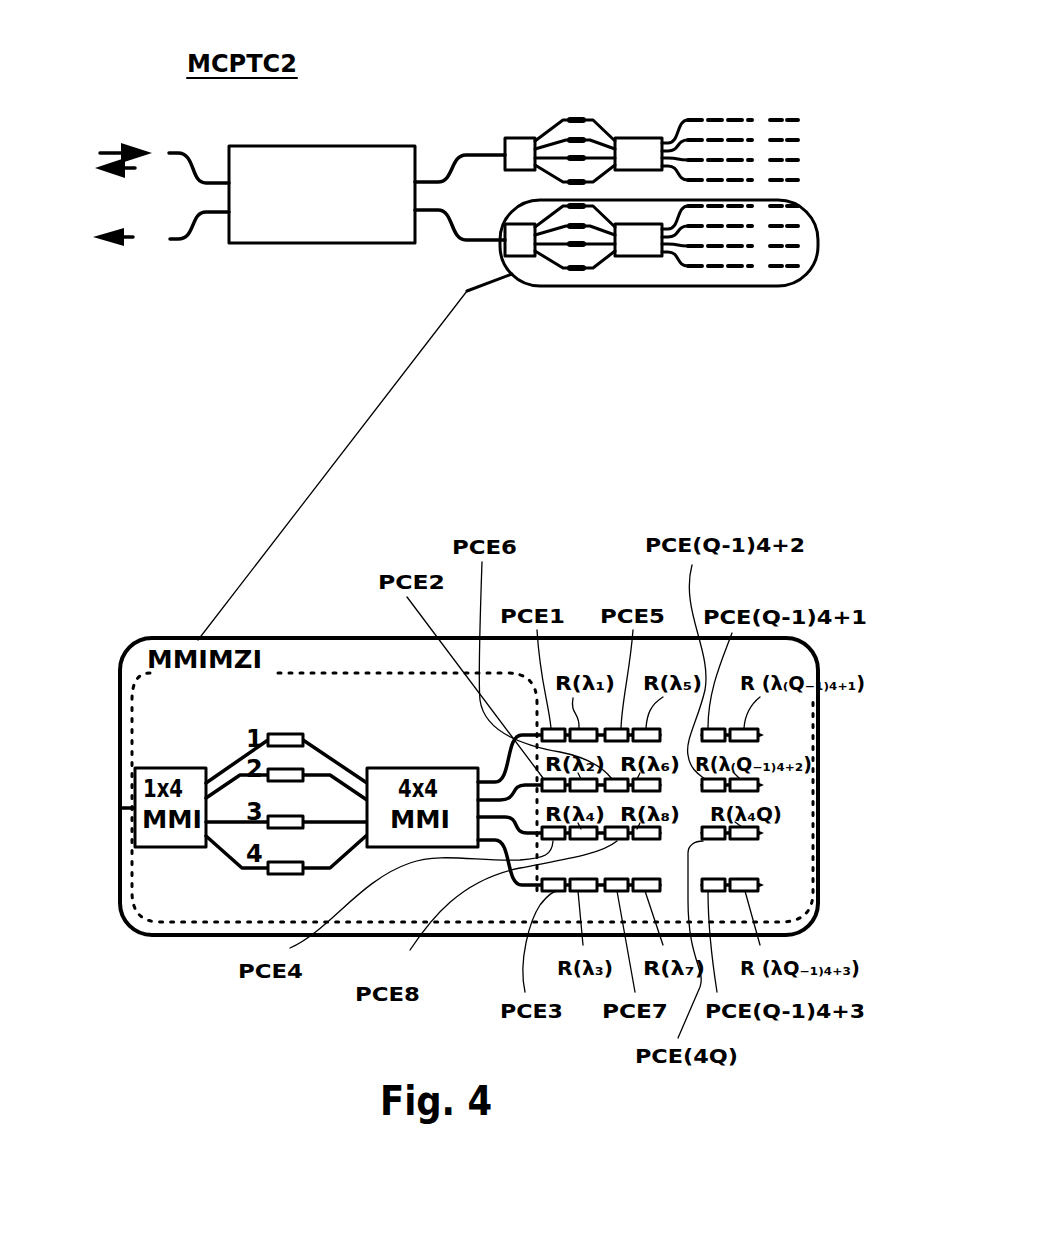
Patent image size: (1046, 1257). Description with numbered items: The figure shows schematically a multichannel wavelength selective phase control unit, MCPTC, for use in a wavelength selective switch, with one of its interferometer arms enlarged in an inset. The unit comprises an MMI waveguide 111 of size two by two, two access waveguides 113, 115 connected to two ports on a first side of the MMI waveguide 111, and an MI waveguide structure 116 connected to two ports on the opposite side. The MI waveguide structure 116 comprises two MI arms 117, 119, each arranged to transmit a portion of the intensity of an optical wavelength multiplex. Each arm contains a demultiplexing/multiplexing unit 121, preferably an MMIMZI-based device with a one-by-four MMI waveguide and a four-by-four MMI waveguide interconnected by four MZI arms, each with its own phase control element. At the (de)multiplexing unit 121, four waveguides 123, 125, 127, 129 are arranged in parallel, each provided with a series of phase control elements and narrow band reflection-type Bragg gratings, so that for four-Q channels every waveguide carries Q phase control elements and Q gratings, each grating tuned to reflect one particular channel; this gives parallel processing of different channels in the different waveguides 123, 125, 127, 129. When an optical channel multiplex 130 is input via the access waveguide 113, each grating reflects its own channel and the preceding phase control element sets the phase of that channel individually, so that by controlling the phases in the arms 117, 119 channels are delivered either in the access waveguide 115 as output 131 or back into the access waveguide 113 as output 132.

The MMI waveguide 111 is at (310, 145).
The access waveguide 113 is at (182, 146).
The access waveguide 115 is at (187, 215).
The MI waveguide structure 116 is at (641, 73).
The MI arm 117 is at (823, 117).
The MI arm 119 is at (823, 203).
The demultiplexing/multiplexing unit 121 is at (290, 673).
The waveguide 123 is at (828, 718).
The waveguide 125 is at (828, 769).
The waveguide 127 is at (828, 818).
The waveguide 129 is at (828, 869).
The optical channel multiplex 130 is at (128, 146).
The output 131 is at (112, 245).
The output 132 is at (104, 172).